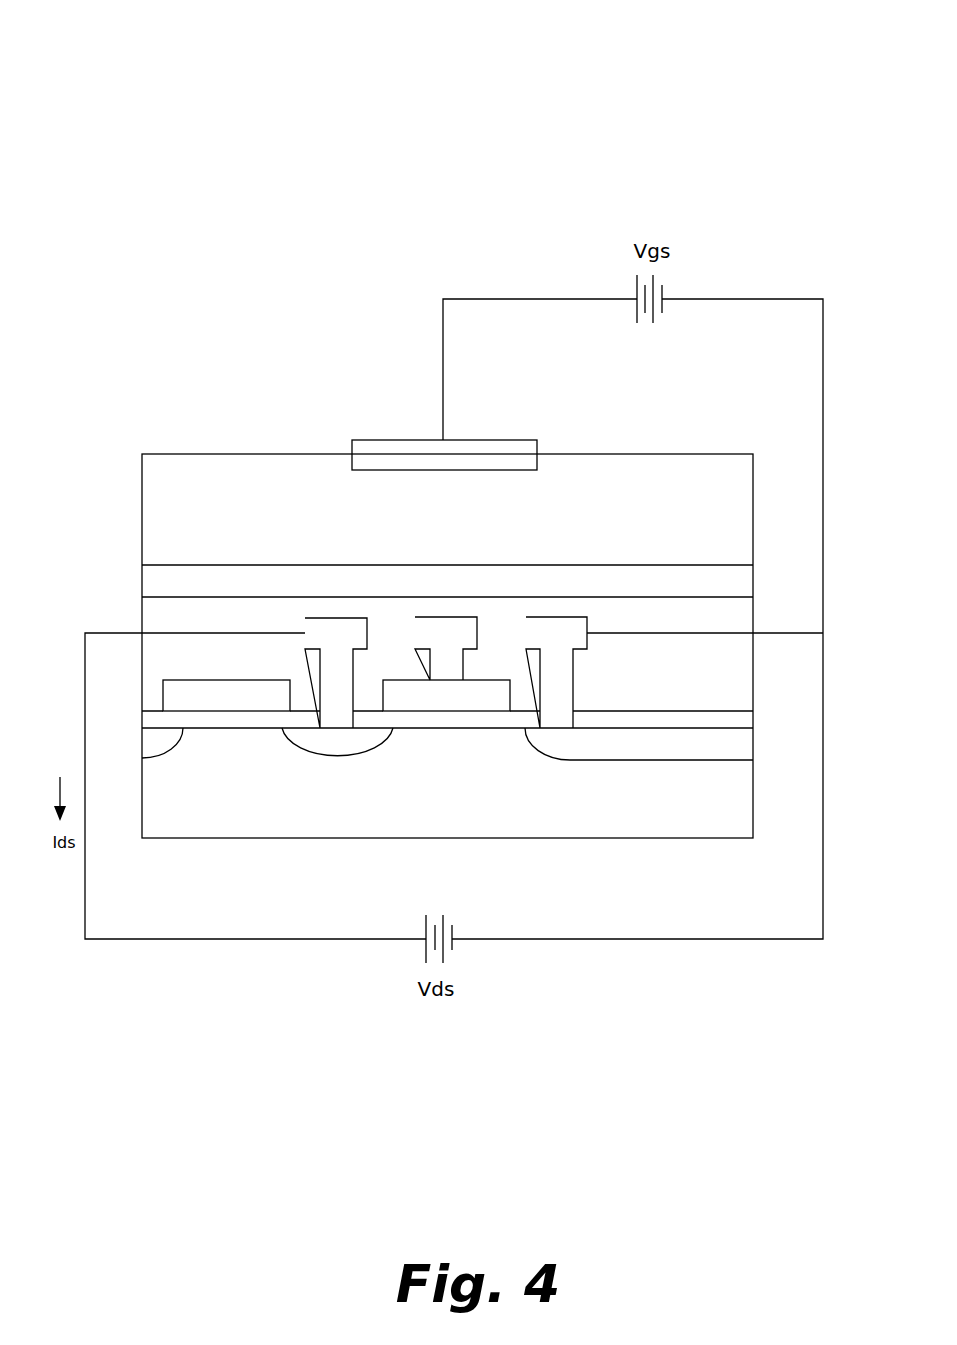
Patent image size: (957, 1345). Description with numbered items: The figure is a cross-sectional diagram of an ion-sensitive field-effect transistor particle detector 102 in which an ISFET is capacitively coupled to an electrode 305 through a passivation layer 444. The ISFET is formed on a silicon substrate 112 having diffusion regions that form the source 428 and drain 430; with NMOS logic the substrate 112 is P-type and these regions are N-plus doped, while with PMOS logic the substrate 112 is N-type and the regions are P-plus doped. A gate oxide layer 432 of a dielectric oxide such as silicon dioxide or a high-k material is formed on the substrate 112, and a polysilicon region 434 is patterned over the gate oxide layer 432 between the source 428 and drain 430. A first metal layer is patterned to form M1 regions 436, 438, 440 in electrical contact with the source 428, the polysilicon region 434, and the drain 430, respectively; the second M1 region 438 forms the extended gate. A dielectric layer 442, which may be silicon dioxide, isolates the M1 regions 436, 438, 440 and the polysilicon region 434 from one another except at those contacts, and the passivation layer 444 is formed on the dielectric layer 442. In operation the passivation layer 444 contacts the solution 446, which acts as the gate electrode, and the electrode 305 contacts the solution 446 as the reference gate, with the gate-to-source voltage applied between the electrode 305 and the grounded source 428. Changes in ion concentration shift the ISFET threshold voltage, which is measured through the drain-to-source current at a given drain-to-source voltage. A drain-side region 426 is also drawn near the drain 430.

The particle detector 102 is at (213, 63).
The substrate 112 is at (712, 800).
The electrode 305 is at (375, 452).
The drain region 426 is at (620, 742).
The source 428 is at (158, 747).
The drain 430 is at (333, 745).
The gate oxide layer 432 is at (727, 720).
The polysilicon region 434 is at (167, 693).
The first M1 region 436 is at (338, 642).
The second M1 region 438 is at (442, 653).
The third M1 region 440 is at (560, 668).
The dielectric layer 442 is at (727, 622).
The passivation layer 444 is at (173, 580).
The solution 446 is at (187, 487).